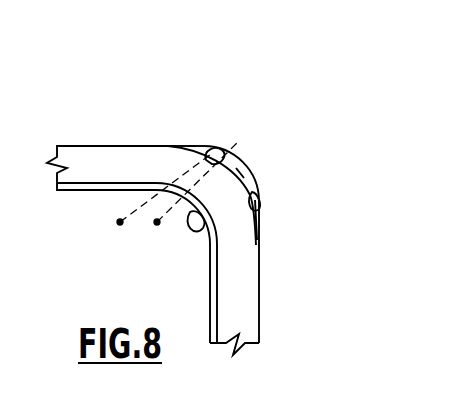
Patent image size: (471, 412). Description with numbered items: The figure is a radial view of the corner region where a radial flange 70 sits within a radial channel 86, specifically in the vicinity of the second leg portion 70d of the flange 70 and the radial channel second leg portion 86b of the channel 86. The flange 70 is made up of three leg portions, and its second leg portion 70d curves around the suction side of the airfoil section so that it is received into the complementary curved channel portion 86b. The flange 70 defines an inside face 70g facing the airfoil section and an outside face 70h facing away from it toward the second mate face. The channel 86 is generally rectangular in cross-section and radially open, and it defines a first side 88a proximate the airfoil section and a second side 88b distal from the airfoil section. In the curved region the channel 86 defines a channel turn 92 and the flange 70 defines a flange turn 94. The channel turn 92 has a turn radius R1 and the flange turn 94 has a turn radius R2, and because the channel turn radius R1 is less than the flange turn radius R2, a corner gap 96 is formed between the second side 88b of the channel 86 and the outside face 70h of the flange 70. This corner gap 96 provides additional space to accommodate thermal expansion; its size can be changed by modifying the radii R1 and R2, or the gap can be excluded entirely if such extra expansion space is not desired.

The radial flange 70 is at (240, 287).
The second leg portion 70d is at (259, 232).
The inside face 70g is at (254, 194).
The outside face 70h is at (183, 147).
The radial channel 86 is at (107, 190).
The radial channel second leg portion 86b is at (170, 146).
The first side 88a is at (124, 189).
The second side 88b is at (262, 207).
The channel turn 92 is at (190, 232).
The flange turn 94 is at (192, 153).
The corner gap 96 is at (238, 174).
The channel turn radius R1 is at (220, 163).
The flange turn radius R2 is at (180, 180).